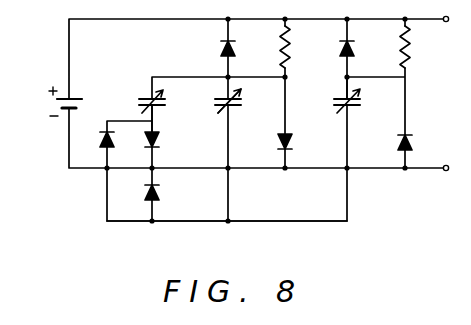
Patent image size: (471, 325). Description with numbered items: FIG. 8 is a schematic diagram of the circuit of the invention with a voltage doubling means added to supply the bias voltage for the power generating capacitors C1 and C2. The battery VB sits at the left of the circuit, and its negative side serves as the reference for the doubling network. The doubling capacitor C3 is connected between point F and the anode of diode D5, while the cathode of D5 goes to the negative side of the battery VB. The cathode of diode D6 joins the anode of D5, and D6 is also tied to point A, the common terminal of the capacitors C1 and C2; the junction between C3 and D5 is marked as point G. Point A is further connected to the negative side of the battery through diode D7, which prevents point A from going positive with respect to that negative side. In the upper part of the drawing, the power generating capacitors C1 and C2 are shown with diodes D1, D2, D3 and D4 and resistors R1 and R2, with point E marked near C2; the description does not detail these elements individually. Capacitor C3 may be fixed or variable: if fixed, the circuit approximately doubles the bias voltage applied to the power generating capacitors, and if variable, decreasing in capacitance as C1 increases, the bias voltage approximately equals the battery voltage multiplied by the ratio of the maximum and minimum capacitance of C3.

The battery VB is at (54, 102).
The diode D1 is at (216, 51).
The diode D2 is at (271, 146).
The diode D3 is at (356, 51).
The diode D4 is at (390, 146).
The diode D5 is at (161, 143).
The diode D6 is at (96, 142).
The diode D7 is at (162, 196).
The power generating capacitor C1 is at (219, 102).
The power generating capacitor C2 is at (355, 103).
The capacitor C3 is at (137, 102).
The resistor R1 is at (297, 47).
The resistor R2 is at (417, 47).
The point F is at (232, 79).
The point E is at (346, 78).
The point G is at (157, 122).
The point A is at (292, 202).